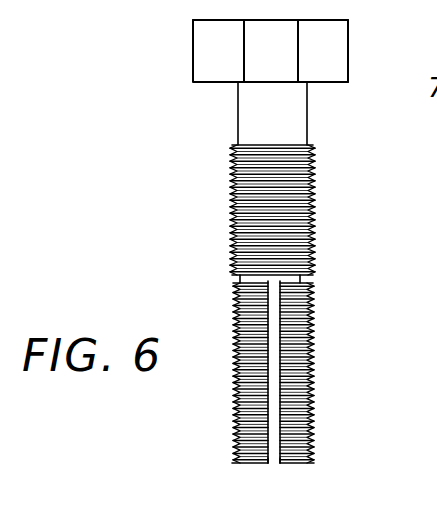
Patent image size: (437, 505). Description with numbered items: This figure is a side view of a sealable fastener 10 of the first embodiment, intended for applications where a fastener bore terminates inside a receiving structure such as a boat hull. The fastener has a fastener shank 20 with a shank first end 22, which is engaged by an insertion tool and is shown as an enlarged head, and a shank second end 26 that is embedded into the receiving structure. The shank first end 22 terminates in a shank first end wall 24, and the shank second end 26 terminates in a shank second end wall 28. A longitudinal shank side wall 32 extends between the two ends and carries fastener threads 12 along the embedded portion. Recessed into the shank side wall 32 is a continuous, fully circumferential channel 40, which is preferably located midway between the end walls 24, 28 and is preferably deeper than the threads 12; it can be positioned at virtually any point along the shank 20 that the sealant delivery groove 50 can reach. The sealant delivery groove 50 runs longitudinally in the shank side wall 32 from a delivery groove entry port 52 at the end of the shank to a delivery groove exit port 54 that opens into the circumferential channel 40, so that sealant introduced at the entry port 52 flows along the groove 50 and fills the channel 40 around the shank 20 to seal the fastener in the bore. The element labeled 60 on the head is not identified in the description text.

The sealable fastener 10 is at (366, 197).
The fastener threads 12 is at (313, 228).
The fastener shank 20 is at (238, 130).
The shank first end 22 is at (348, 33).
The shank first end wall 24 is at (205, 19).
The shank second end 26 is at (240, 449).
The shank second end wall 28 is at (258, 465).
The shank side wall 32 is at (313, 164).
The circumferential channel 40 is at (302, 281).
The sealant delivery groove 50 is at (273, 408).
The delivery groove entry port 52 is at (272, 462).
The delivery groove exit port 54 is at (238, 282).
The side face of head 60 is at (343, 62).